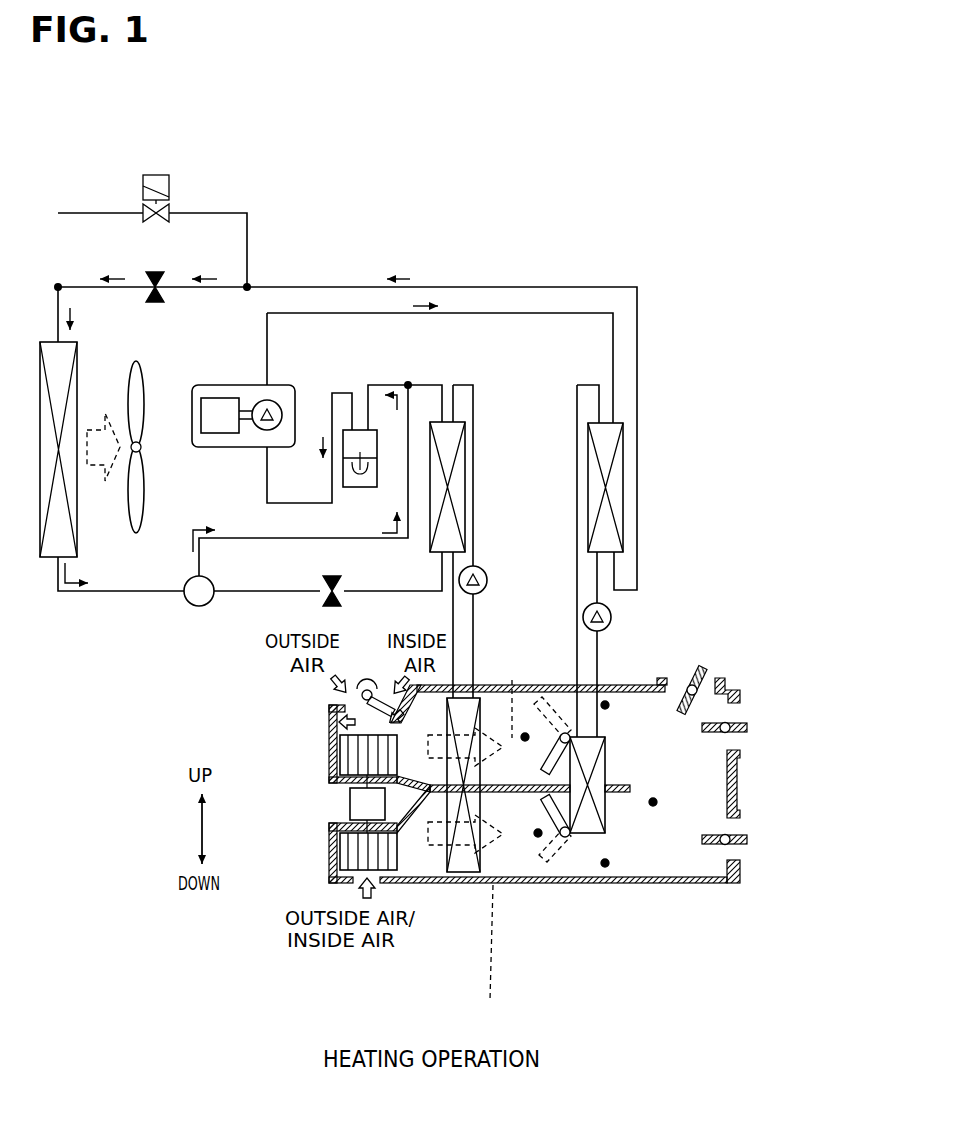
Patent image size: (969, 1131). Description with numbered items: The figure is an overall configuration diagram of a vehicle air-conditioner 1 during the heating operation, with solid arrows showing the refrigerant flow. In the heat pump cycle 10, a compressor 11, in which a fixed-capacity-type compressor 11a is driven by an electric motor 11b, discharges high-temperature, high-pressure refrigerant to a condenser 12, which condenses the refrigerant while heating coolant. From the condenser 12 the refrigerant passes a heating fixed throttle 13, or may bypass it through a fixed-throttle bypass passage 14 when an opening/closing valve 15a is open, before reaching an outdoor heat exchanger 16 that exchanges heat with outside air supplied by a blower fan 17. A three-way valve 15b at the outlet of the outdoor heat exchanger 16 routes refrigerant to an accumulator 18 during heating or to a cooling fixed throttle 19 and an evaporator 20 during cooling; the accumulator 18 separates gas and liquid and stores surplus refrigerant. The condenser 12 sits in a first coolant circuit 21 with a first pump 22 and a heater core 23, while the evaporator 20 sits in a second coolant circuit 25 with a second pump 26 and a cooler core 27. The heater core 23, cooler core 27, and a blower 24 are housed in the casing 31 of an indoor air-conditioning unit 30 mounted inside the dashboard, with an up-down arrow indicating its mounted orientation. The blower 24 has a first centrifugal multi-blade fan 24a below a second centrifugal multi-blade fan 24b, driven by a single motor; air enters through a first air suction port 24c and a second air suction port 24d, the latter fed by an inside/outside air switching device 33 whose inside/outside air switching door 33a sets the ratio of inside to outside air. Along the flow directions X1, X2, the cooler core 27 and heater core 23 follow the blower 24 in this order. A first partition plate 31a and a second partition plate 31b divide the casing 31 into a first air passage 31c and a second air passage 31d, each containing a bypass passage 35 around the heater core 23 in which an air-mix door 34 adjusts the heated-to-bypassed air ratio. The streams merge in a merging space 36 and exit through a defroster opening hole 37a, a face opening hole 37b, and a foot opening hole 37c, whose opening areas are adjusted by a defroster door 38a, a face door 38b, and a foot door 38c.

The vehicle air-conditioner 1 is at (635, 276).
The heat pump cycle 10 is at (368, 261).
The compressor 11 is at (245, 383).
The fixed-capacity-type compressor 11a is at (283, 405).
The electric motor 11b is at (198, 410).
The condenser 12 is at (623, 486).
The heating fixed throttle 13 is at (155, 281).
The fixed-throttle bypass passage 14 is at (248, 248).
The opening/closing valve 15a is at (170, 183).
The three-way valve 15b is at (212, 582).
The outdoor heat exchanger 16 is at (78, 349).
The blower fan 17 is at (143, 494).
The accumulator 18 is at (360, 488).
The cooling fixed throttle 19 is at (338, 578).
The evaporator 20 is at (467, 482).
The first coolant circuit 21 is at (589, 381).
The first pump 22 is at (612, 619).
The heater core 23 is at (612, 815).
The blower 24 is at (347, 805).
The first centrifugal multi-blade fan 24a is at (358, 853).
The second centrifugal multi-blade fan 24b is at (357, 755).
The first air suction port 24c is at (357, 883).
The second air suction port 24d is at (347, 721).
The second coolant circuit 25 is at (480, 440).
The second pump 26 is at (486, 568).
The cooler core 27 is at (492, 706).
The indoor air-conditioning unit 30 is at (686, 651).
The casing 31 is at (460, 884).
The first partition plate 31a is at (427, 792).
The second partition plate 31b is at (528, 880).
The first air passage 31c is at (525, 736).
The second air passage 31d is at (538, 833).
The inside/outside air switching device 33 is at (363, 673).
The inside/outside air switching door 33a is at (363, 708).
The air-mix door 34 is at (553, 736).
The bypass passage 35 is at (606, 705).
The merging space 36 is at (653, 802).
The defroster opening hole 37a is at (735, 692).
The face opening hole 37b is at (740, 752).
The foot opening hole 37c is at (740, 864).
The defroster door 38a is at (697, 668).
The face door 38b is at (747, 725).
The foot door 38c is at (747, 836).
The flow direction X1 is at (496, 952).
The flow direction X2 is at (513, 696).